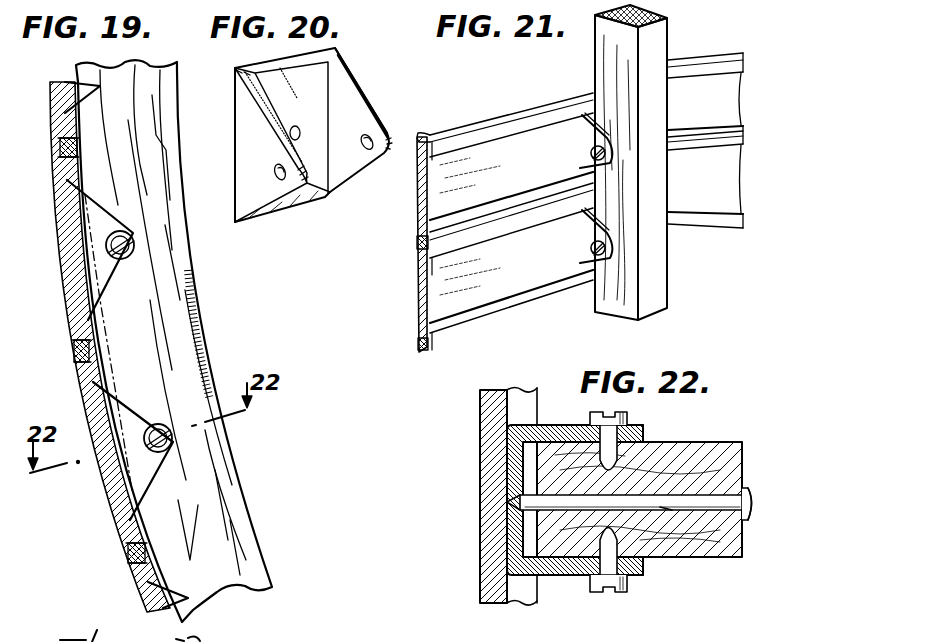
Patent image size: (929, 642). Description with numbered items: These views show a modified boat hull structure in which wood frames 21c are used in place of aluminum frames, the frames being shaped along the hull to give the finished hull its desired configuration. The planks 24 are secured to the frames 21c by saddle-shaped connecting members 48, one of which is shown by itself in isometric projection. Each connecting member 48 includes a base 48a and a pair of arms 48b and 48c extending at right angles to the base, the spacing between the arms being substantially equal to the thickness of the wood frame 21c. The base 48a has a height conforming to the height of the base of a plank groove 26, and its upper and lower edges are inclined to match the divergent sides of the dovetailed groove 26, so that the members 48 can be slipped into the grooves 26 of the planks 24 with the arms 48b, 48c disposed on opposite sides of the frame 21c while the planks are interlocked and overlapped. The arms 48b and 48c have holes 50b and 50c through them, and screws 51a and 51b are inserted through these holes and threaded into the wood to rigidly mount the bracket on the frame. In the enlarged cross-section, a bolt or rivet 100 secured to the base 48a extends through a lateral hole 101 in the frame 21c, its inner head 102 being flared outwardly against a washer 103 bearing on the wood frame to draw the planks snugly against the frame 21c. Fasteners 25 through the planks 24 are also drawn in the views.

In FIG. 19, the wood frame 21c is at (233, 492).
In FIG. 21, the wood frame 21c is at (668, 43).
In FIG. 22, the wood frame 21c is at (717, 443).
In FIG. 19, the plank 24 is at (62, 227).
In FIG. 21, the plank 24 is at (417, 190).
In FIG. 22, the plank 24 is at (480, 523).
In FIG. 19, the fastener 25 is at (58, 143).
In FIG. 21, the fastener 25 is at (417, 241).
In FIG. 19, the plank groove 26 is at (78, 257).
In FIG. 19, the connecting member 48 is at (110, 217).
In FIG. 20, the connecting member 48 is at (315, 156).
In FIG. 21, the connecting member 48 is at (585, 143).
In FIG. 22, the connecting member 48 is at (533, 496).
In FIG. 20, the base 48a is at (313, 80).
In FIG. 22, the base 48a is at (518, 455).
In FIG. 20, the arm 48b is at (258, 153).
In FIG. 22, the arm 48b is at (558, 576).
In FIG. 20, the arm 48c is at (363, 98).
In FIG. 22, the arm 48c is at (552, 427).
In FIG. 20, the hole 50b is at (280, 173).
In FIG. 20, the hole 50c is at (383, 143).
In FIG. 19, the screw 51a is at (134, 245).
In FIG. 21, the screw 51a is at (600, 146).
In FIG. 22, the screw 51a is at (607, 567).
In FIG. 22, the screw 51b is at (613, 420).
In FIG. 22, the bolt or rivet 100 is at (555, 497).
In FIG. 22, the lateral hole 101 is at (667, 510).
In FIG. 22, the inner head 102 is at (753, 507).
In FIG. 22, the washer 103 is at (748, 487).